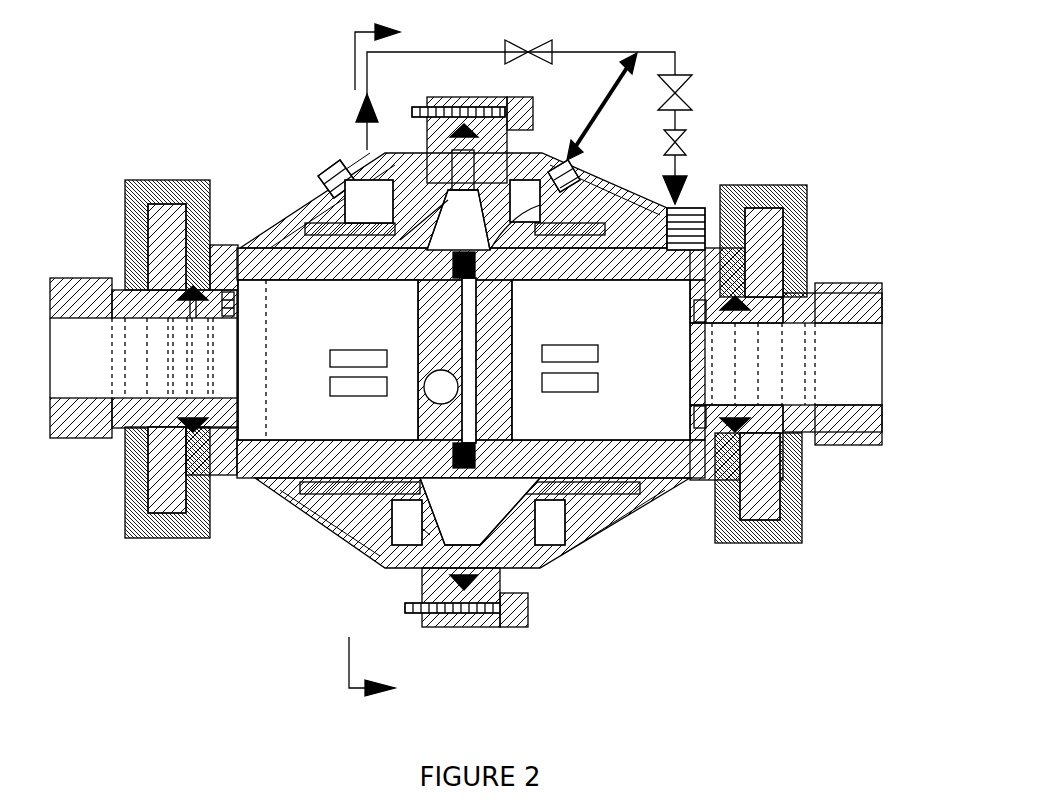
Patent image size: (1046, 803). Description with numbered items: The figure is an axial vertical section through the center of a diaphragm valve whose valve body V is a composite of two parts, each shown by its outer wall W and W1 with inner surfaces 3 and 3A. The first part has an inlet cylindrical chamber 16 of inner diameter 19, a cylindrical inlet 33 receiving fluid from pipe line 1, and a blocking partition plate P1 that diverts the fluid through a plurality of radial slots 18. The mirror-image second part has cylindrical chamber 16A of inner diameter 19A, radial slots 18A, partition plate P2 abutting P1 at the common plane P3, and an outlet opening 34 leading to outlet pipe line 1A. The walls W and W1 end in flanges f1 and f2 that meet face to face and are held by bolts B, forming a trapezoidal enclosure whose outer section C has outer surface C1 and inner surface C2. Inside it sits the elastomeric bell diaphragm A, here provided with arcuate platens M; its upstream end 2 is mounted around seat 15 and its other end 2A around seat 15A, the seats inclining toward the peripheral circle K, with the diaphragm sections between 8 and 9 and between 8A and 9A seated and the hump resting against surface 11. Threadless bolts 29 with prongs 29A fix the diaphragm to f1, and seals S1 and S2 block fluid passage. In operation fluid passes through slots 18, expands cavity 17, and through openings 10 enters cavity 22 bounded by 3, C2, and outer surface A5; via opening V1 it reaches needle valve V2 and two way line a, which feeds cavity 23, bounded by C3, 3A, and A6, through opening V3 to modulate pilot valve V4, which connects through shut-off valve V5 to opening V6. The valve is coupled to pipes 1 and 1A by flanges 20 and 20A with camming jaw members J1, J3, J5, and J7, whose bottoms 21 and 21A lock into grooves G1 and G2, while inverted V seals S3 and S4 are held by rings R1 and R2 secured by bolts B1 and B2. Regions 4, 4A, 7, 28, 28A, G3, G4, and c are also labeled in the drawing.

The pipe line 1 is at (50, 280).
The outlet pipe line 1A is at (882, 308).
The upstream end of leg d1 2 is at (300, 495).
The end of leg d2 2A is at (655, 478).
The inner surface of wall W 3 is at (345, 525).
The inner surface of wall W1 3A is at (585, 545).
The lower chamber 4 is at (392, 515).
The lower chamber 4A is at (585, 512).
The lower port 7 is at (480, 511).
The diaphragm seating boundary 8 is at (285, 440).
The diaphragm seating boundary 8A is at (670, 440).
The diaphragm seating boundary 9 is at (420, 440).
The diaphragm seating boundary 9A is at (512, 440).
The openings 10 is at (470, 200).
The surface 11 is at (420, 580).
The seat 15 is at (345, 280).
The seat 15A is at (585, 280).
The inlet cylindrical chamber 16 is at (320, 440).
The cylindrical chamber 16A is at (620, 440).
The cavity 17 is at (512, 440).
The radial slots 18 is at (330, 355).
The radial slots 18A is at (598, 350).
The inner diameter 19 is at (285, 440).
The inner diameter 19A is at (630, 440).
The flange 20 is at (165, 182).
The flange 20A is at (775, 195).
The bottom of jaw members 21 is at (130, 302).
The bottom of jaw members 21A is at (800, 410).
The cavity 22 is at (405, 190).
The cavity 23 is at (535, 190).
The upper housing 28 is at (265, 490).
The lower housing 28A is at (630, 495).
The threadless bolts 29 is at (505, 130).
The prongs 29A is at (505, 95).
The cylindrical inlet 33 is at (148, 394).
The outlet opening 34 is at (790, 358).
The bell diaphragm A is at (400, 575).
The outer surface of first diaphragm section A5 is at (350, 165).
The outer surface of second diaphragm section A6 is at (600, 200).
The bolts B is at (538, 680).
The bolt B1 is at (240, 335).
The bolt B2 is at (698, 322).
The outer section of trapezoidal enclosure C is at (415, 150).
The outer surface of enclosure section C1 is at (420, 150).
The inner surface of enclosure section C2 is at (405, 540).
The inner surface of second part C3 is at (510, 570).
The groove G1 is at (118, 282).
The groove G2 is at (810, 440).
The gasket G3 is at (280, 246).
The gasket G4 is at (665, 540).
The camming jaw member J1 is at (125, 230).
The camming jaw member J3 is at (125, 535).
The camming jaw member J5 is at (807, 215).
The camming jaw member J7 is at (790, 540).
The peripheral circle K is at (385, 250).
The arcuate platen M is at (548, 280).
The partition plate P1 is at (432, 330).
The partition plate P2 is at (512, 430).
The common plane P3 is at (450, 360).
The ring R1 is at (242, 298).
The ring R2 is at (664, 360).
The seal S1 is at (528, 600).
The seal S2 is at (515, 360).
The inverted V type seal S3 is at (150, 312).
The inverted V type seal S4 is at (721, 364).
The valve body V is at (225, 250).
The opening V1 is at (367, 135).
The needle valve V2 is at (516, 60).
The opening V3 is at (575, 165).
The pilot control valve V4 is at (690, 80).
The shut off valve V5 is at (686, 150).
The opening V6 is at (660, 300).
The outer wall W is at (320, 175).
The outer wall W1 is at (575, 540).
The two way line a is at (675, 60).
The flow c is at (682, 105).
The flange f1 is at (432, 627).
The flange f2 is at (470, 627).